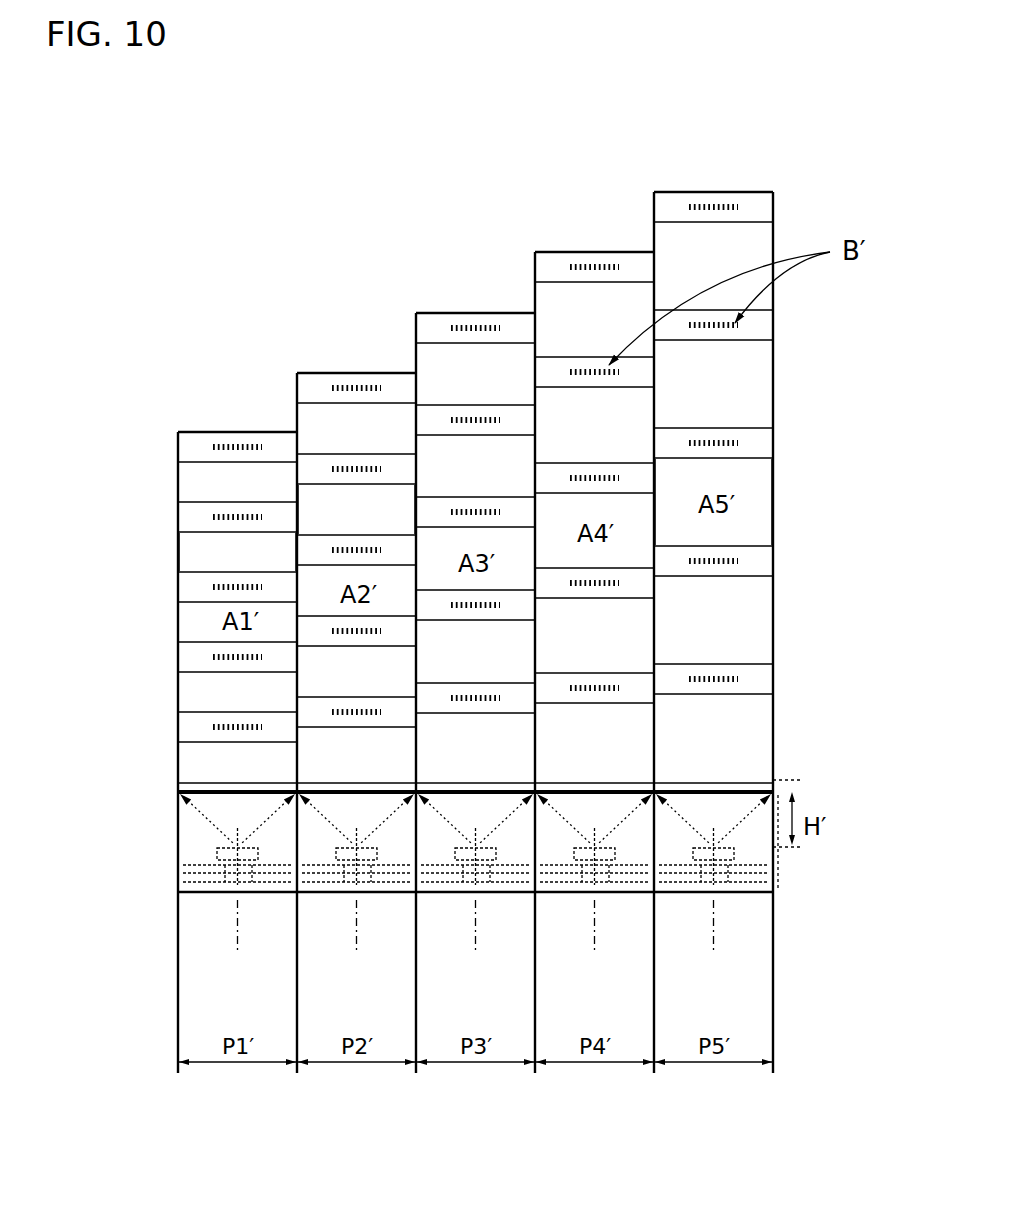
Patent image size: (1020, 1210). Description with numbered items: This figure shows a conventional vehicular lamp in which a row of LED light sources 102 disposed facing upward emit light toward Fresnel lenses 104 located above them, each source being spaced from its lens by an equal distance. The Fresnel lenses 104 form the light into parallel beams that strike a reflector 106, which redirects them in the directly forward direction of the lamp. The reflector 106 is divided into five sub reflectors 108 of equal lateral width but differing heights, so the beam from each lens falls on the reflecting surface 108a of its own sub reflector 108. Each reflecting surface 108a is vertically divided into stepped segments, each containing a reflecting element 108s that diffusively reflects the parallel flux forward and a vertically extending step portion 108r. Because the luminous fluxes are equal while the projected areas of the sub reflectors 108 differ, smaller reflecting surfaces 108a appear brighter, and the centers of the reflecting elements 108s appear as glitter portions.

The LED light source 102 is at (222, 845).
The Fresnel lens 104 is at (203, 780).
The reflector 106 is at (291, 413).
The sub reflector 108 is at (357, 364).
The reflecting surface 108a is at (338, 520).
The reflecting element 108s is at (757, 442).
The step portion 108r is at (753, 503).